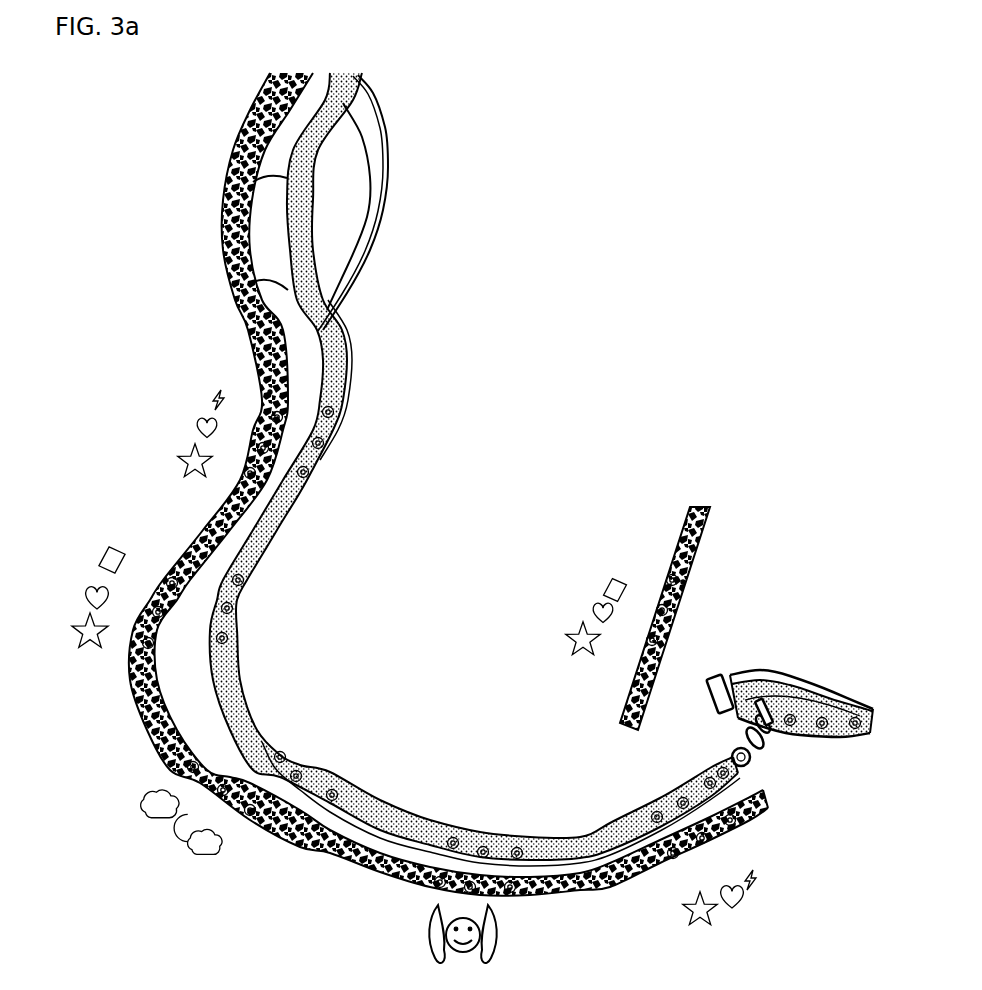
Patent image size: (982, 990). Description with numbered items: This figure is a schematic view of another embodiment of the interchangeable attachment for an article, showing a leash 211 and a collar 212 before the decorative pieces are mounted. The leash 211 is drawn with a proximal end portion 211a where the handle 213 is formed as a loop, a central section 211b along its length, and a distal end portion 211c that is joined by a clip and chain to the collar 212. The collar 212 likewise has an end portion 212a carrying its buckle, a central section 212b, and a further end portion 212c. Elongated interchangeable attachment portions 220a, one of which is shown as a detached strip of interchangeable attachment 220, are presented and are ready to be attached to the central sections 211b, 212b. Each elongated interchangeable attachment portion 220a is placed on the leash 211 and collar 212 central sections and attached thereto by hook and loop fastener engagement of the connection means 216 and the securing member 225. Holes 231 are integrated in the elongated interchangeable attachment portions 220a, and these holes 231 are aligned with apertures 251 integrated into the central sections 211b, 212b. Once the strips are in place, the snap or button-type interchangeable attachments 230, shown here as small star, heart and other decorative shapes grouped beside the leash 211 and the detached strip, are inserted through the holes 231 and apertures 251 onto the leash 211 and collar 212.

The leash 211 is at (421, 466).
The leash end portion 211a is at (237, 310).
The leash central section 211b is at (213, 653).
The leash distal end portion 211c is at (733, 760).
The collar 212 is at (800, 760).
The collar end portion 212a is at (713, 700).
The collar central section 212b is at (837, 690).
The collar end portion 212c is at (753, 677).
The handle 213 is at (228, 203).
The connection means 216 is at (285, 528).
The interchangeable attachment 220 is at (153, 737).
The elongated interchangeable attachment portion 220a is at (697, 503).
The securing member 225 is at (418, 920).
The snap-type interchangeable attachments 230 is at (359, 515).
The holes 231 is at (267, 390).
The apertures 251 is at (340, 413).